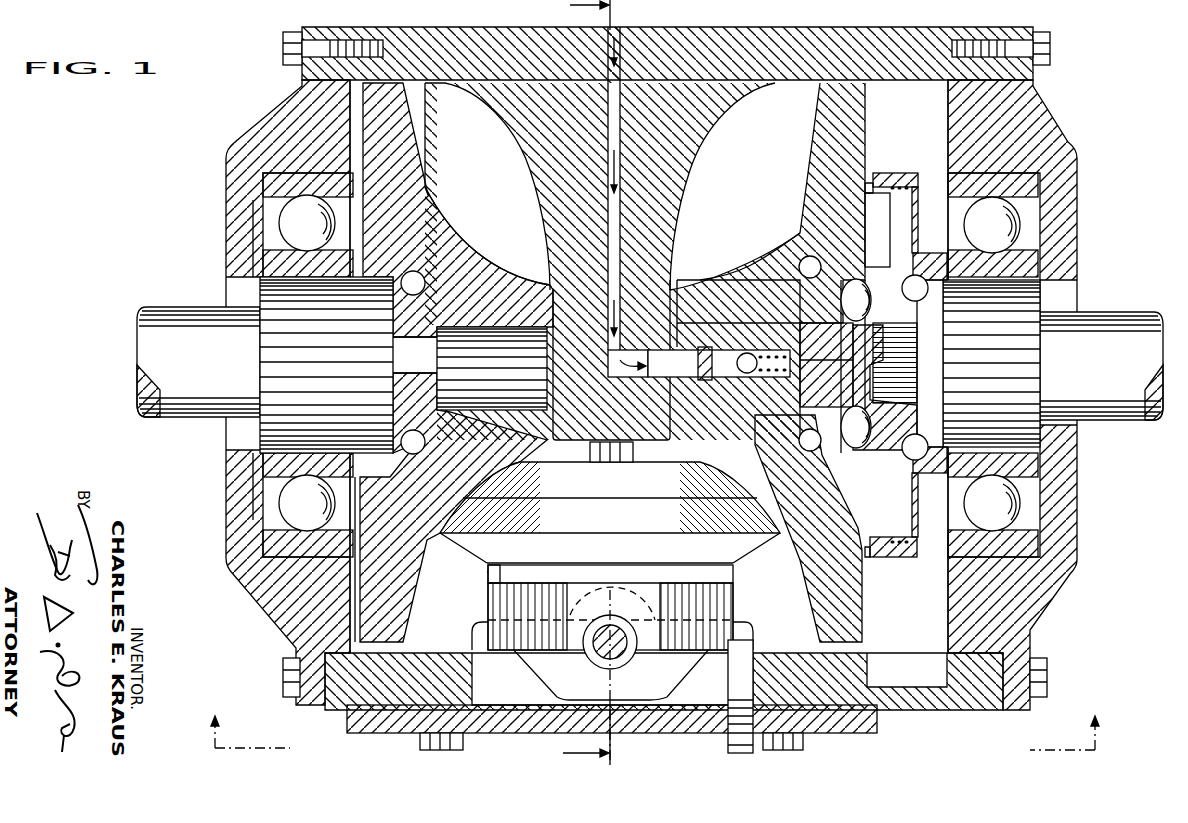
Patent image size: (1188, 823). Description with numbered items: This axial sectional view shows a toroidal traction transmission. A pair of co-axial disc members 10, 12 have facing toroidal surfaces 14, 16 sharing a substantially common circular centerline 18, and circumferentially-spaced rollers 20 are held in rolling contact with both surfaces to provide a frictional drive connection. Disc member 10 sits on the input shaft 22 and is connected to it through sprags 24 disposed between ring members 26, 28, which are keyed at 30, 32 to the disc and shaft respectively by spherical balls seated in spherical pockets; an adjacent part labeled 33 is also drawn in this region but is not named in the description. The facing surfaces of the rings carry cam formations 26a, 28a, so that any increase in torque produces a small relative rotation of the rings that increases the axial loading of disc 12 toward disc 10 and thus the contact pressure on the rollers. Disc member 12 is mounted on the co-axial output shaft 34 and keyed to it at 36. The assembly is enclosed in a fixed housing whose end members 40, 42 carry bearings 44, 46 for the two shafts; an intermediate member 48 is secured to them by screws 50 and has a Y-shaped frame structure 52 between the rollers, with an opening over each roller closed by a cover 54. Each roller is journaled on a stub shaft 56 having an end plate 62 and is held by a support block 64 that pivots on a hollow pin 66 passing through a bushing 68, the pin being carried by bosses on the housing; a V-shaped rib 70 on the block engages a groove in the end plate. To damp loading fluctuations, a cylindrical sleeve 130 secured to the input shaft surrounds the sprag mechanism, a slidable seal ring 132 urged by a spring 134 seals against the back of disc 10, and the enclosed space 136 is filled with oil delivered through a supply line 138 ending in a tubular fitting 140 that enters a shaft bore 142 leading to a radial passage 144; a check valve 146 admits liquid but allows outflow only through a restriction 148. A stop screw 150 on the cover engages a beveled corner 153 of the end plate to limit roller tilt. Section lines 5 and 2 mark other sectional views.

The toroidal disc member 10 is at (840, 187).
The toroidal disc member 12 is at (398, 192).
The toroidal surface 14 is at (795, 198).
The toroidal surface 16 is at (432, 193).
The circular centerline 18 is at (618, 87).
The rollers 20 is at (637, 527).
The input shaft 22 is at (1114, 311).
The sprags 24 is at (868, 412).
The ring member 26 is at (845, 290).
The cam formations 26a is at (853, 450).
The ring member 28 is at (915, 275).
The cam formations 28a is at (878, 275).
The key 30 is at (810, 266).
The key 32 is at (935, 310).
The ring 33 is at (880, 255).
The output shaft 34 is at (190, 306).
The key 36 is at (414, 272).
The end member 40 is at (1015, 97).
The end member 42 is at (282, 112).
The bearing 44 is at (988, 203).
The bearing 46 is at (297, 205).
The intermediate housing member 48 is at (472, 30).
The screws 50 is at (298, 30).
The frame structure 52 is at (693, 198).
The cover 54 is at (880, 728).
The stub shaft 56 is at (634, 452).
The end plate 62 is at (735, 573).
The support block 64 is at (735, 605).
The hollow pin 66 is at (622, 635).
The bushing 68 is at (605, 625).
The V-shaped rib 70 is at (577, 572).
The cylindrical sleeve 130 is at (895, 174).
The seal ring 132 is at (870, 180).
The spring 134 is at (915, 187).
The space 136 is at (905, 213).
The supply line 138 is at (607, 270).
The tubular fitting 140 is at (664, 372).
The shaft bore 142 is at (702, 380).
The radial passage 144 is at (858, 345).
The check valve 146 is at (748, 375).
The restriction 148 is at (760, 320).
The stop screw 150 is at (728, 745).
The beveled corner 153 is at (492, 570).
The section line 5- 5 is at (655, 726).
The section line 2- 2 is at (586, 382).